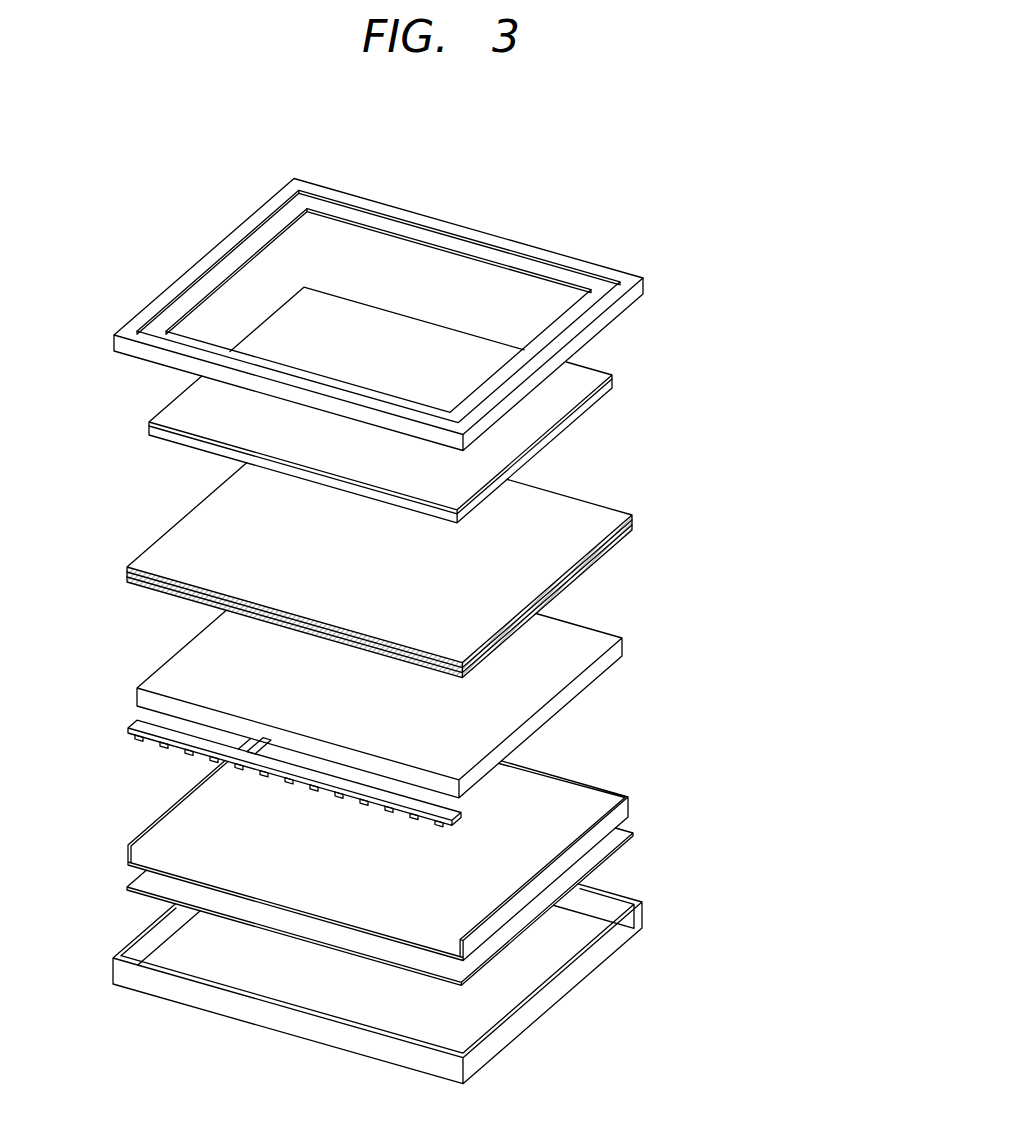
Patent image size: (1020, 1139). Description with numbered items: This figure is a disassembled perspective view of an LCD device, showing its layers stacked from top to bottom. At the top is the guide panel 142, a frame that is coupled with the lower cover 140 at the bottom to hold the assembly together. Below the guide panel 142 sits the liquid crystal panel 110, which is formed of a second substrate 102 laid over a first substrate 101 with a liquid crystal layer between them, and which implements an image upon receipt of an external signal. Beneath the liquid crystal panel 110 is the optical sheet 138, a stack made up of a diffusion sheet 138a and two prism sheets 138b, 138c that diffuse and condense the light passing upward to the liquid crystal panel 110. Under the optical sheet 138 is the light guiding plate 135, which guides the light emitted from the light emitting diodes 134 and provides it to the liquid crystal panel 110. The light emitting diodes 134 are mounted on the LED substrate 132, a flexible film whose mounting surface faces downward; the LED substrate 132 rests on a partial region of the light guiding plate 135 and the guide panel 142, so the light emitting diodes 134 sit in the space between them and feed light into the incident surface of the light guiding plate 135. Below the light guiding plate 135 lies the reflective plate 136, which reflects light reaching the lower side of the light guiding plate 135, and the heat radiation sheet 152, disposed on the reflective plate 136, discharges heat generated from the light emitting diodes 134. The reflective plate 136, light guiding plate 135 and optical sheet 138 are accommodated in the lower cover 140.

The guide panel 142 is at (644, 287).
The liquid crystal panel 110 is at (440, 405).
The second substrate 102 is at (607, 372).
The first substrate 101 is at (600, 361).
The optical sheet 138 is at (459, 570).
The prism sheet 138c is at (633, 514).
The prism sheet 138b is at (636, 521).
The diffusion sheet 138a is at (433, 601).
The light guiding plate 135 is at (611, 656).
The LED substrate 132 is at (129, 731).
The light emitting diodes 134 is at (135, 742).
The reflective plate 136 is at (627, 809).
The heat radiation sheet 152 is at (593, 852).
The lower cover 140 is at (605, 947).